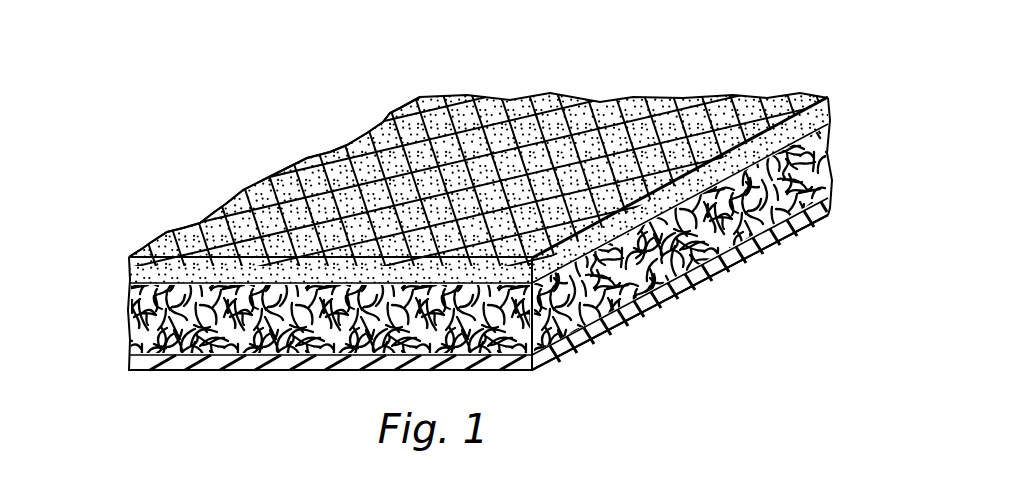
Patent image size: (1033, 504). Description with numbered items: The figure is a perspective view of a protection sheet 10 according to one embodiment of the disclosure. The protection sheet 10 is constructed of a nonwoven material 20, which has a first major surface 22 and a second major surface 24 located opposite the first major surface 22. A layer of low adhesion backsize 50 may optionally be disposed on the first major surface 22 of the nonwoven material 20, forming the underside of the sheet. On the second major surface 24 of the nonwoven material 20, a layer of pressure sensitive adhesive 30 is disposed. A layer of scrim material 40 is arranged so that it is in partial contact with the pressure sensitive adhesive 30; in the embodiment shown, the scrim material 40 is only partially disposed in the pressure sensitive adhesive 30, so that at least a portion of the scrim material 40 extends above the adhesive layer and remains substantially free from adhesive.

The protection sheet 10 is at (619, 71).
The nonwoven material 20 is at (130, 320).
The first major surface 22 is at (207, 360).
The second major surface 24 is at (198, 222).
The layer of pressure sensitive adhesive 30 is at (128, 272).
The scrim material 40 is at (330, 153).
The layer of low adhesion backsize 50 is at (130, 362).